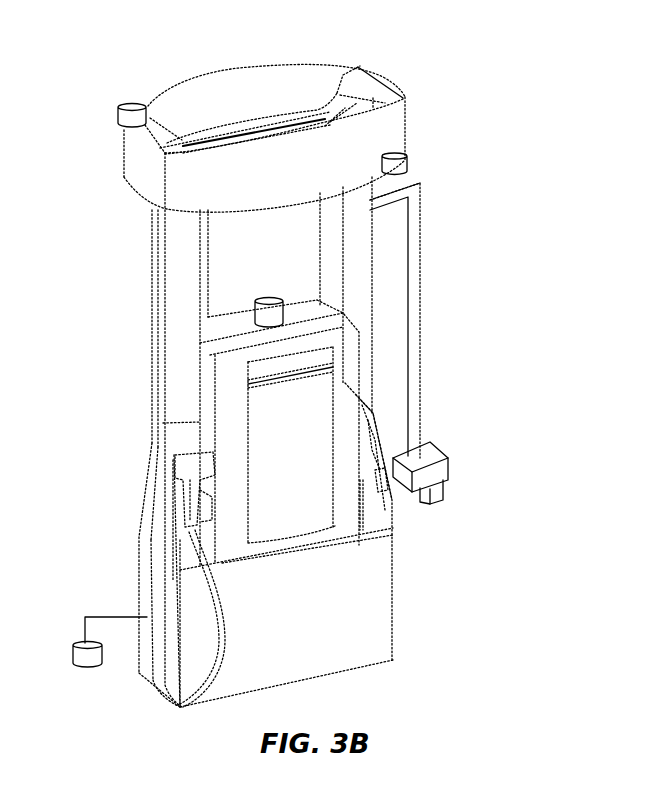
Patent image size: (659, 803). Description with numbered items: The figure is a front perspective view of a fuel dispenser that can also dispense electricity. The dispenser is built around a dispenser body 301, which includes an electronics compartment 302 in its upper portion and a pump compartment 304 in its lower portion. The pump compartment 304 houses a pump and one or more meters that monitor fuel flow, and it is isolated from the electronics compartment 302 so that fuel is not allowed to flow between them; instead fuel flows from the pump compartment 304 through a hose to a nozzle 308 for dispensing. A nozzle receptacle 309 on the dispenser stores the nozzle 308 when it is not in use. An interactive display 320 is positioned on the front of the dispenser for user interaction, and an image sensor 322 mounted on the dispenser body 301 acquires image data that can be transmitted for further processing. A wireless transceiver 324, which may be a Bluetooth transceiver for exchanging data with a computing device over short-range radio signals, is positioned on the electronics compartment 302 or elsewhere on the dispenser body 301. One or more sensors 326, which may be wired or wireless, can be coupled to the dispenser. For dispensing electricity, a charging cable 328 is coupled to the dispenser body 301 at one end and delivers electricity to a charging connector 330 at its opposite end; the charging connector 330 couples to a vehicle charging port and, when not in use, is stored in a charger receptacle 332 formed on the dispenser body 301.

The dispenser body 301 is at (412, 114).
The electronics compartment 302 is at (189, 344).
The pump compartment 304 is at (362, 595).
The nozzle 308 is at (176, 462).
The nozzle receptacle 309 is at (180, 537).
The interactive display 320 is at (254, 406).
The image sensor 322 is at (422, 157).
The wireless transceiver 324 is at (114, 94).
The sensor 326 is at (73, 628).
The charging cable 328 is at (433, 326).
The charging connector 330 is at (457, 455).
The charger receptacle 332 is at (404, 519).